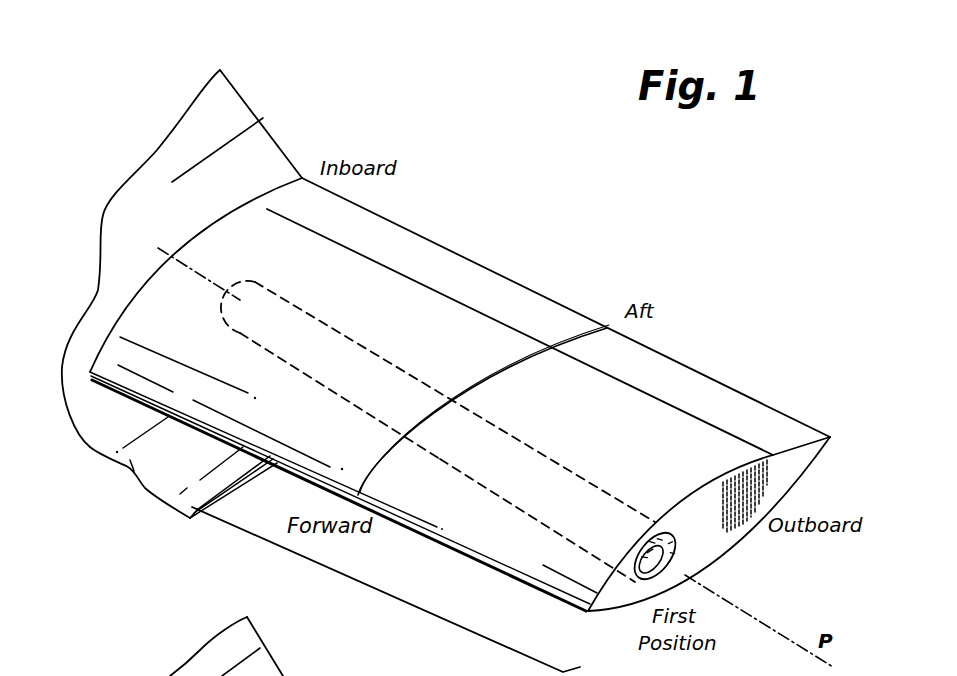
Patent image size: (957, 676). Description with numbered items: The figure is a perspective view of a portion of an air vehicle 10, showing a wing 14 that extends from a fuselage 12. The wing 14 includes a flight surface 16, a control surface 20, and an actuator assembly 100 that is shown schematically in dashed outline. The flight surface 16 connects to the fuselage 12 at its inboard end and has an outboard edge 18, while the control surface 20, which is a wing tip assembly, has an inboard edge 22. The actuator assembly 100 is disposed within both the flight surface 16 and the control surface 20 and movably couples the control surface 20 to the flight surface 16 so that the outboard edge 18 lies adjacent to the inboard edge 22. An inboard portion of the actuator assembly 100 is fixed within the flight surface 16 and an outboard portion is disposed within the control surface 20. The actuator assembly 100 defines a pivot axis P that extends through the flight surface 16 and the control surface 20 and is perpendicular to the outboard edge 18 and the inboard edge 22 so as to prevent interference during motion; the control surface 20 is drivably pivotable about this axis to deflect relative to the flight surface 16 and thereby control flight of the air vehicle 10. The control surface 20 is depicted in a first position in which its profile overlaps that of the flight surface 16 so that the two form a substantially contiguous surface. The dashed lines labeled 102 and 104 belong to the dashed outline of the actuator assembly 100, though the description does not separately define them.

The air vehicle 10 is at (592, 206).
The fuselage 12 is at (240, 121).
The wing 14 is at (322, 568).
The flight surface 16 is at (218, 446).
The outboard edge 18 is at (483, 374).
The control surface 20 is at (477, 570).
The inboard edge 22 is at (569, 340).
The actuator assembly 100 is at (526, 434).
The slot end 102 is at (298, 383).
The lower spar line 104 is at (467, 486).